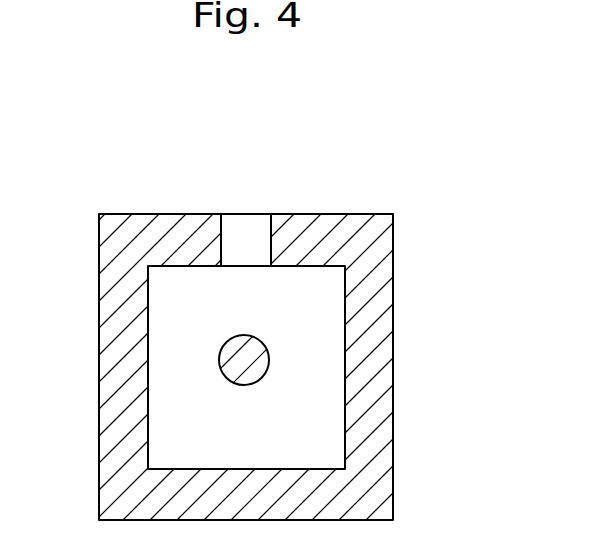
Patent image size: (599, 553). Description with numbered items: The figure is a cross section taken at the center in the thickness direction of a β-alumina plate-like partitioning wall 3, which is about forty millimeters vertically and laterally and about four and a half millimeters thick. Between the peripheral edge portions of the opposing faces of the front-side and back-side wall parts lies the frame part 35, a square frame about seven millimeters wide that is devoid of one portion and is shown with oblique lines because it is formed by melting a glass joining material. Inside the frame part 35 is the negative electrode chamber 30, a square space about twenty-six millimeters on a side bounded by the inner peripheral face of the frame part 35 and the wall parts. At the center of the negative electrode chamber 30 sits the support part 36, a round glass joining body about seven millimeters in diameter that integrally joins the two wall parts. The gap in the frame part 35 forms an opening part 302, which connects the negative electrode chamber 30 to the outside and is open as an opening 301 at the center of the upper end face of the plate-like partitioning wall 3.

The plate-like partitioning wall 3 is at (271, 303).
The negative electrode chamber 30 is at (315, 433).
The frame part 35 is at (395, 214).
The support part 36 is at (222, 363).
The opening 301 is at (253, 213).
The opening part 302 is at (237, 251).